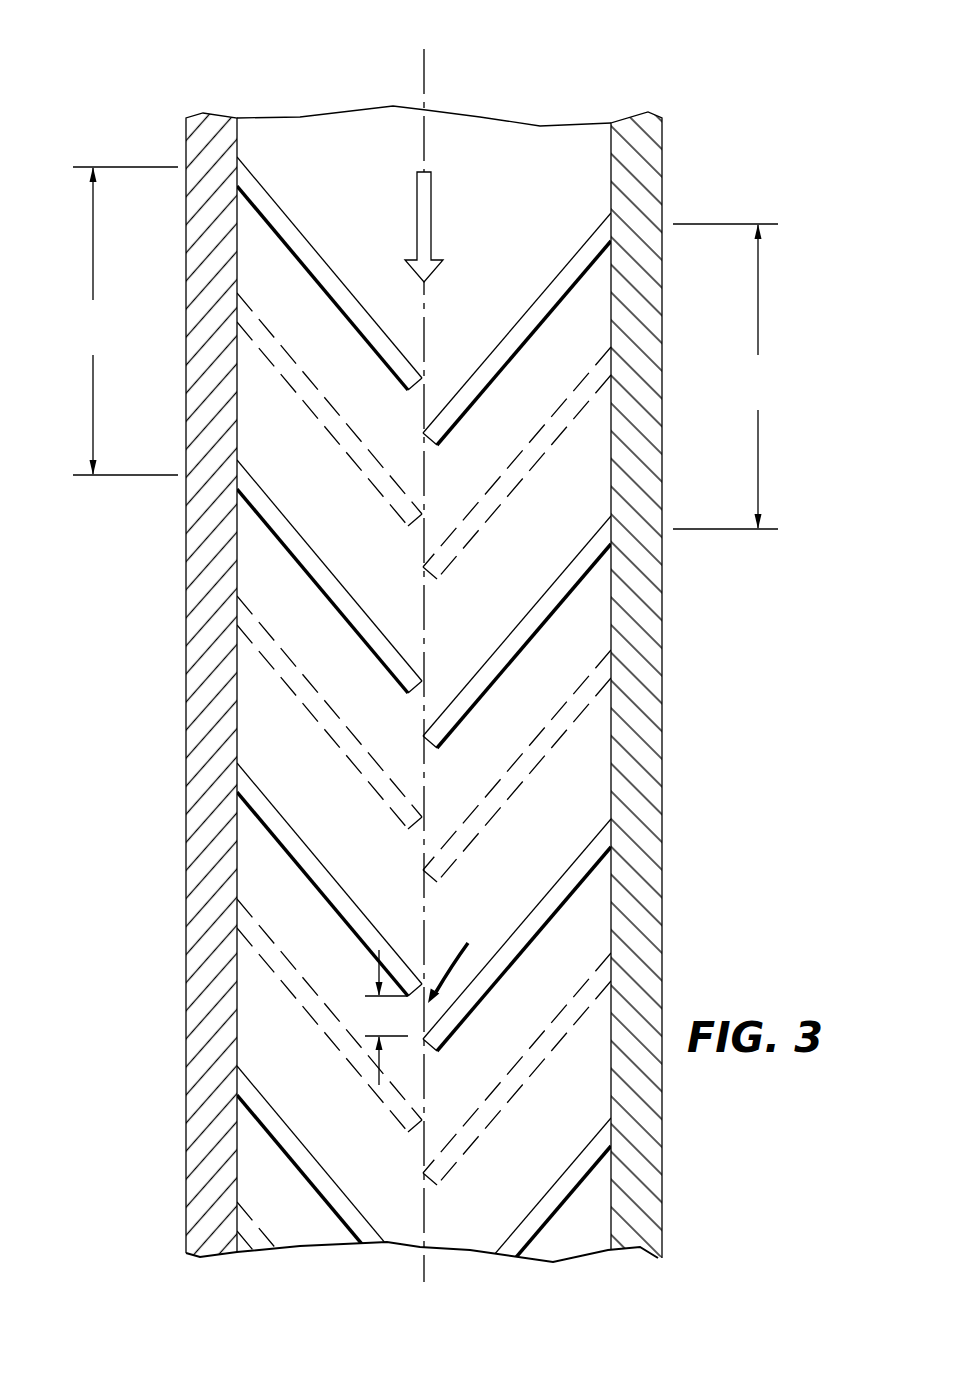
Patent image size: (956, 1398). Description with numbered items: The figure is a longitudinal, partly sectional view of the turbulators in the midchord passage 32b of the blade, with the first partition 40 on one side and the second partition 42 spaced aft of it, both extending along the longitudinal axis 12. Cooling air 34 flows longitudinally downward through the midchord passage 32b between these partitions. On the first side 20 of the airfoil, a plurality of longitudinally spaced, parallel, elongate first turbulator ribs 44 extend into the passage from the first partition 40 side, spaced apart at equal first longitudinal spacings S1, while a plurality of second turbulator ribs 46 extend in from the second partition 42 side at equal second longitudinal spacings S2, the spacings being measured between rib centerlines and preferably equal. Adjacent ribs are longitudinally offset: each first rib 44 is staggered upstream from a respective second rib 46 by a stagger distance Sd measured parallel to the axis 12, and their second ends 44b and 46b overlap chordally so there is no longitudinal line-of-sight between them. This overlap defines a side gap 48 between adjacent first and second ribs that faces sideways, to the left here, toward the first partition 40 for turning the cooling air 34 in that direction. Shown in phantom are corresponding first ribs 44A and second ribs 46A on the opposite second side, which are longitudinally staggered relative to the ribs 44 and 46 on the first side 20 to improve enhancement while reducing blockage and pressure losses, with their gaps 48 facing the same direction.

The longitudinal axis 12 is at (428, 93).
The first side 20 is at (462, 1230).
The midchord passage 32b is at (522, 1180).
The cooling air 34 is at (432, 218).
The first partition 40 is at (185, 980).
The second partition 42 is at (663, 948).
The first turbulator ribs 44 is at (250, 182).
The first ribs on second side 44A is at (331, 410).
The second ends of first ribs 44b is at (423, 683).
The second turbulator ribs 46 is at (548, 297).
The second ribs on second side 46A is at (507, 478).
The second ends of second ribs 46b is at (423, 732).
The side gap 48 is at (467, 953).
The first longitudinal spacing S1 is at (125, 321).
The second longitudinal spacing S2 is at (725, 376).
The stagger distance Sd is at (386, 1017).